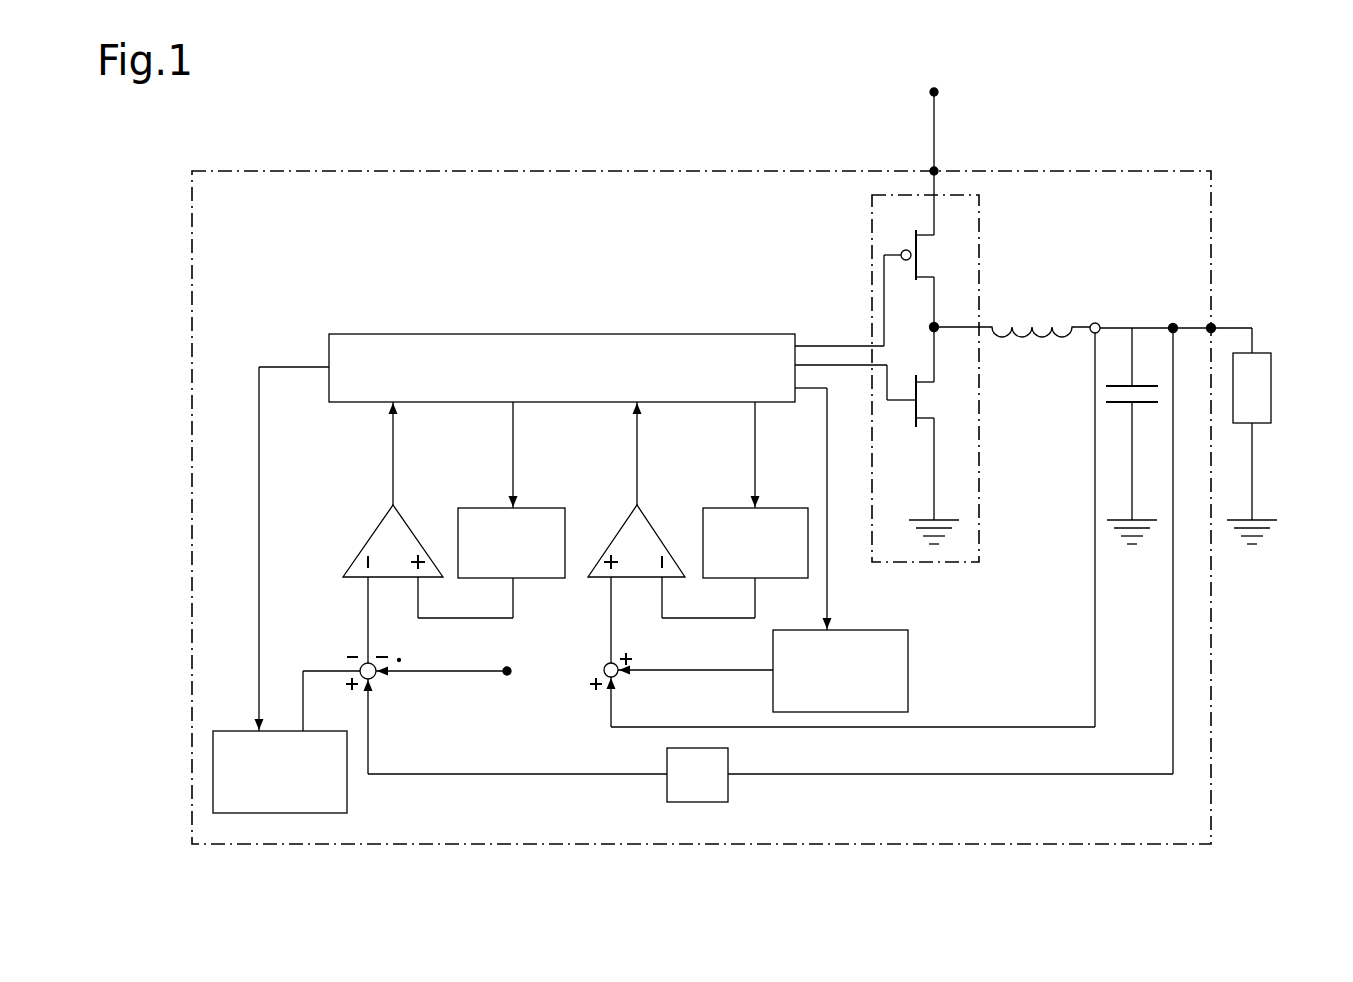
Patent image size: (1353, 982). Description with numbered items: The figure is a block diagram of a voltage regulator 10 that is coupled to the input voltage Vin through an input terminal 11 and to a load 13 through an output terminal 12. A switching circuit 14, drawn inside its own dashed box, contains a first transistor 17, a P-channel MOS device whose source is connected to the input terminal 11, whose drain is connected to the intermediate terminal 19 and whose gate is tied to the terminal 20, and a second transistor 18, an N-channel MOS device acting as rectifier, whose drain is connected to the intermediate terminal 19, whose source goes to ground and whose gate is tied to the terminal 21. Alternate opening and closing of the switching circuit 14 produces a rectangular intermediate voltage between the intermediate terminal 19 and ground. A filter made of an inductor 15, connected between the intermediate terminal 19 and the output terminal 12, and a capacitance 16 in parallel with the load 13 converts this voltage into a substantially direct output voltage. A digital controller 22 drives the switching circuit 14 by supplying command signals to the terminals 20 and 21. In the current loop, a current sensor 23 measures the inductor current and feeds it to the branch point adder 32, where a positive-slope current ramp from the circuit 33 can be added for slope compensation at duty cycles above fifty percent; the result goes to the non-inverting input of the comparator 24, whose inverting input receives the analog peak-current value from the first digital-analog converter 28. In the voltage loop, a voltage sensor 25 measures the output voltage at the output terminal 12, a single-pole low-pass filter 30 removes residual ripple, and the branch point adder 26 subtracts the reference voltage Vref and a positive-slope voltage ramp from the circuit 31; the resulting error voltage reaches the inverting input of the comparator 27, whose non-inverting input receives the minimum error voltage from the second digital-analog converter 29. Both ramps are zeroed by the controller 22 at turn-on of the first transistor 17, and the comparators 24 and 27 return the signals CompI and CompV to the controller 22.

The voltage regulator 10 is at (555, 171).
The input terminal 11 is at (957, 115).
The output terminal 12 is at (1213, 325).
The load 13 is at (1258, 423).
The switching circuit 14 is at (972, 562).
The inductor 15 is at (1030, 320).
The capacitance 16 is at (1125, 404).
The first transistor 17 is at (918, 258).
The second transistor 18 is at (928, 400).
The intermediate terminal 19 is at (928, 332).
The terminal 20 is at (850, 345).
The terminal 21 is at (838, 370).
The digital controller 22 is at (577, 381).
The current sensor 23 is at (1096, 322).
The comparator 24 is at (650, 527).
The voltage sensor 25 is at (1172, 322).
The branch point adder 26 is at (378, 680).
The comparator 27 is at (372, 532).
The first digital-analog converter 28 is at (773, 557).
The second digital-analog converter 29 is at (530, 557).
The single-pole low-pass filter 30 is at (713, 785).
The circuit 31 is at (295, 785).
The branch point adder 32 is at (603, 662).
The circuit 33 is at (856, 684).